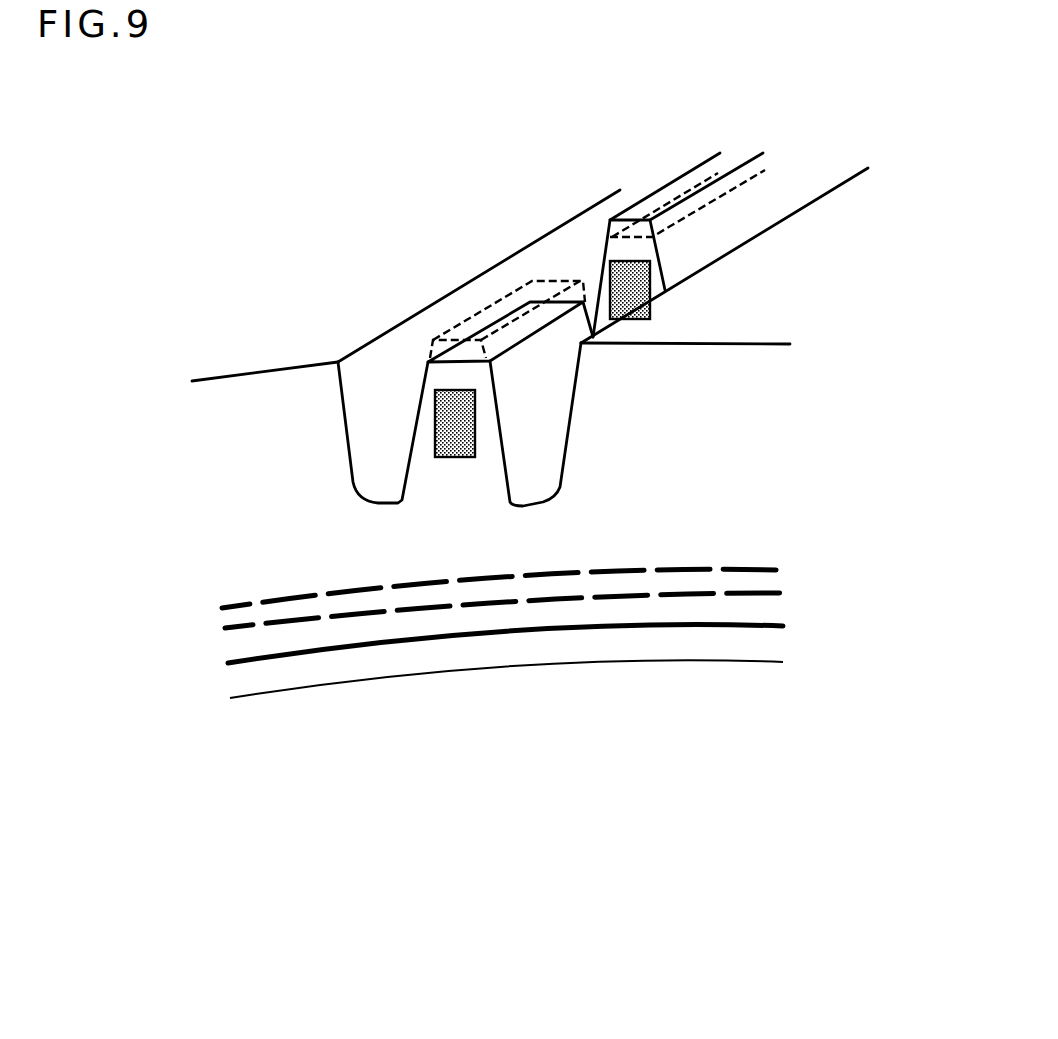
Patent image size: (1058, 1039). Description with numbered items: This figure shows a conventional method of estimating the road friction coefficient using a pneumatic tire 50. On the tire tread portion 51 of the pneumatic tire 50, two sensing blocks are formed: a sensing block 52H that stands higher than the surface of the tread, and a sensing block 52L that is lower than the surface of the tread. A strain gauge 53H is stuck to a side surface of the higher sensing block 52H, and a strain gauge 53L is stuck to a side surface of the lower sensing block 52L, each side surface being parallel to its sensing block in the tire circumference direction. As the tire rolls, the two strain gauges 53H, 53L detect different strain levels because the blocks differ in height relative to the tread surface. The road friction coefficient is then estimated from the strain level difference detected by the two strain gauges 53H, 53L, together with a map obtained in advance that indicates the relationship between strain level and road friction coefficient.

The pneumatic tire 50 is at (475, 670).
The tire tread portion 51 is at (282, 369).
The sensing block 52L is at (424, 385).
The sensing block 52H is at (608, 237).
The strain gauge 53L is at (467, 424).
The strain gauge 53H is at (637, 281).